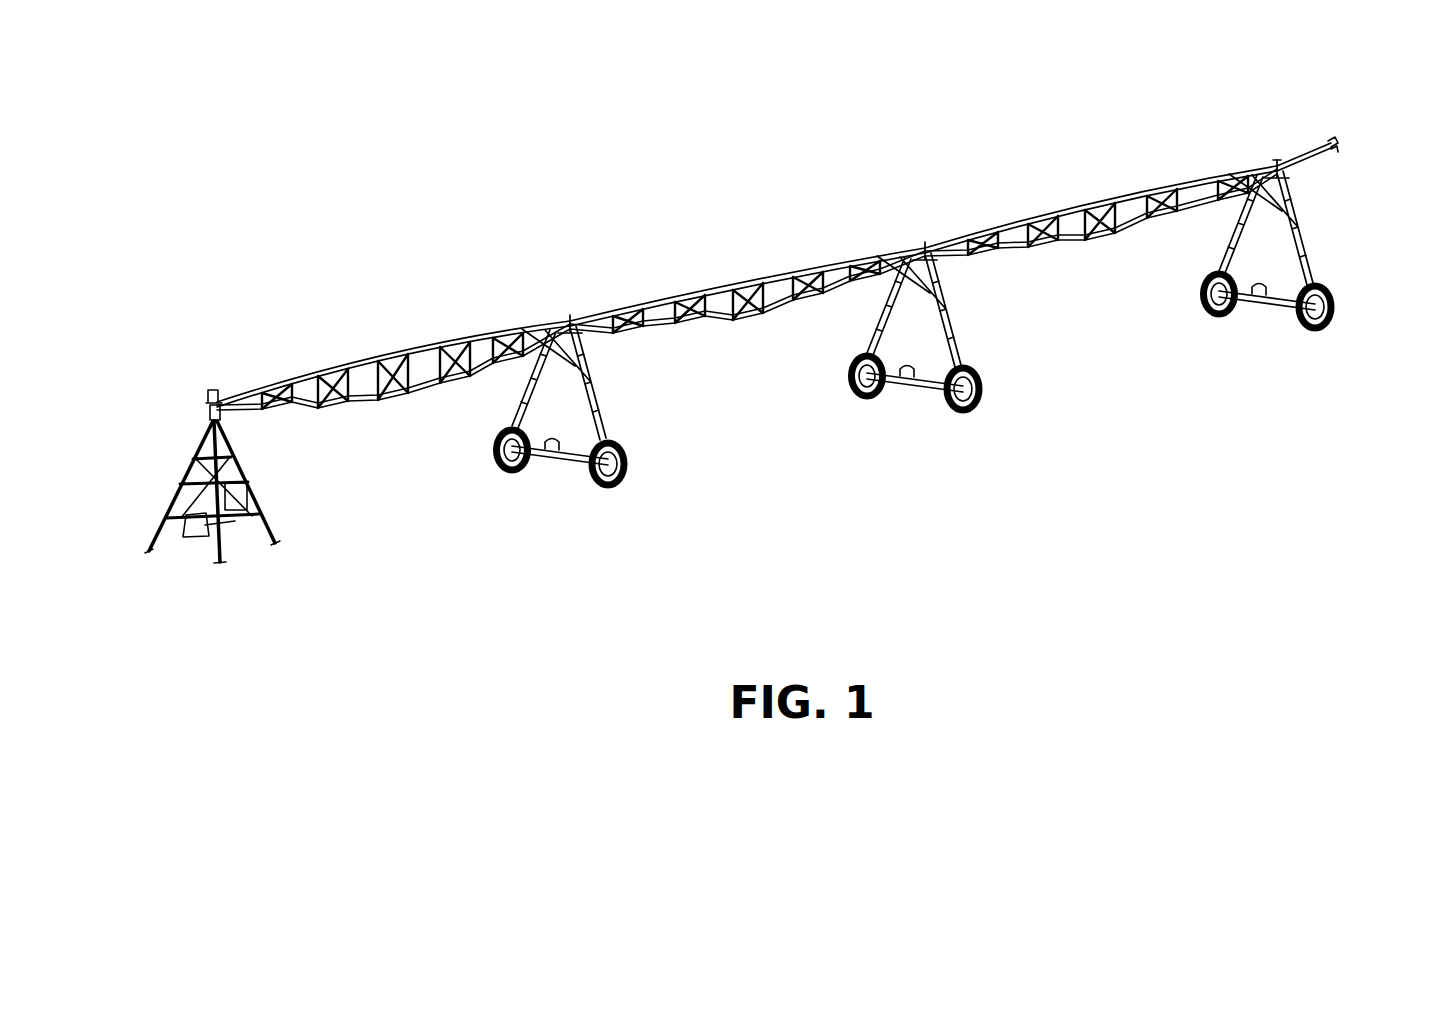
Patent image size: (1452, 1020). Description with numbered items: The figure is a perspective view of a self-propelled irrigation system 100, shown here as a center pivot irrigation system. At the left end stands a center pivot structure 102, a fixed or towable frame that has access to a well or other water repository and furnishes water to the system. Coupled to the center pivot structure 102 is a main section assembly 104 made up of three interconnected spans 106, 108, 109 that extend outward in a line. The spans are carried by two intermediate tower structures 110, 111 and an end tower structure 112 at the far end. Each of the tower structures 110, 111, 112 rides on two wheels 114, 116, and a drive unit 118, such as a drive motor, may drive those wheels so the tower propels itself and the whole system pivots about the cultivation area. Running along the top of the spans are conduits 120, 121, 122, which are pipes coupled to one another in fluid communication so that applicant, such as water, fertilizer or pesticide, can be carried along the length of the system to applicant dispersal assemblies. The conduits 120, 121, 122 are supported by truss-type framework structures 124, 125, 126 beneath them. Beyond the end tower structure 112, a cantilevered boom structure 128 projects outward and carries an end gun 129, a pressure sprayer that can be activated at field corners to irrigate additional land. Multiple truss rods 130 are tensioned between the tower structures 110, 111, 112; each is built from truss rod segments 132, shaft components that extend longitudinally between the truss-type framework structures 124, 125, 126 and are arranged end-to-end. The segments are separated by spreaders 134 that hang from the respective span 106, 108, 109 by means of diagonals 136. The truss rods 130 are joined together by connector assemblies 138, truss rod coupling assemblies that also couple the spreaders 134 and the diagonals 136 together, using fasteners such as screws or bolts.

The irrigation system 100 is at (578, 116).
The center pivot structure 102 is at (175, 472).
The main section assembly 104 is at (328, 272).
The span 106 is at (466, 330).
The span 108 is at (790, 262).
The span 109 is at (1120, 186).
The tower structure 110 is at (522, 410).
The tower structure 111 is at (876, 324).
The end tower structure 112 is at (1228, 250).
The wheel 114 is at (620, 490).
The wheel 116 is at (514, 474).
The drive unit 118 is at (554, 441).
The conduit 120 is at (317, 374).
The conduit 121 is at (669, 294).
The conduit 122 is at (1068, 204).
The truss-type framework structure 124 is at (368, 406).
The truss-type framework structure 125 is at (722, 328).
The truss-type framework structure 126 is at (1090, 243).
The cantilevered boom structure 128 is at (1306, 165).
The end gun 129 is at (1335, 139).
The truss rod 130 is at (796, 330).
The truss rod segment 132 is at (779, 315).
The spreader 134 is at (448, 378).
The diagonal 136 is at (399, 400).
The connector assembly 138 is at (750, 330).